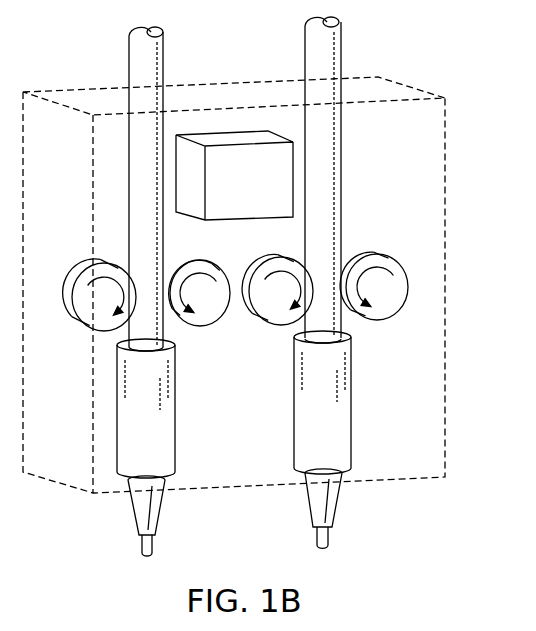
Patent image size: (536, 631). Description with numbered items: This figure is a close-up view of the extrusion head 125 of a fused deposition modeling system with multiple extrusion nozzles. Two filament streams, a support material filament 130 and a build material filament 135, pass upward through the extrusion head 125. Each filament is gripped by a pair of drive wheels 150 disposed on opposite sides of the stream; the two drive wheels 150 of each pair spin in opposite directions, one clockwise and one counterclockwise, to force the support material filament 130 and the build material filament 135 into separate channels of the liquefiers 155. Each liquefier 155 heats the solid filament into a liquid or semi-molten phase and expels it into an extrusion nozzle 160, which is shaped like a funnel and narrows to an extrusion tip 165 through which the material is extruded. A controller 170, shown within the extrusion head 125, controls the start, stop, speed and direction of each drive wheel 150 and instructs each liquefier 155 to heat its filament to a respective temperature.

The extrusion head 125 is at (446, 291).
The support material filament 130 is at (341, 60).
The build material filament 135 is at (129, 66).
The drive wheel 150 is at (360, 247).
The liquefier 155 is at (176, 410).
The extrusion nozzle 160 is at (128, 505).
The extrusion tip 165 is at (141, 545).
The controller 170 is at (266, 192).